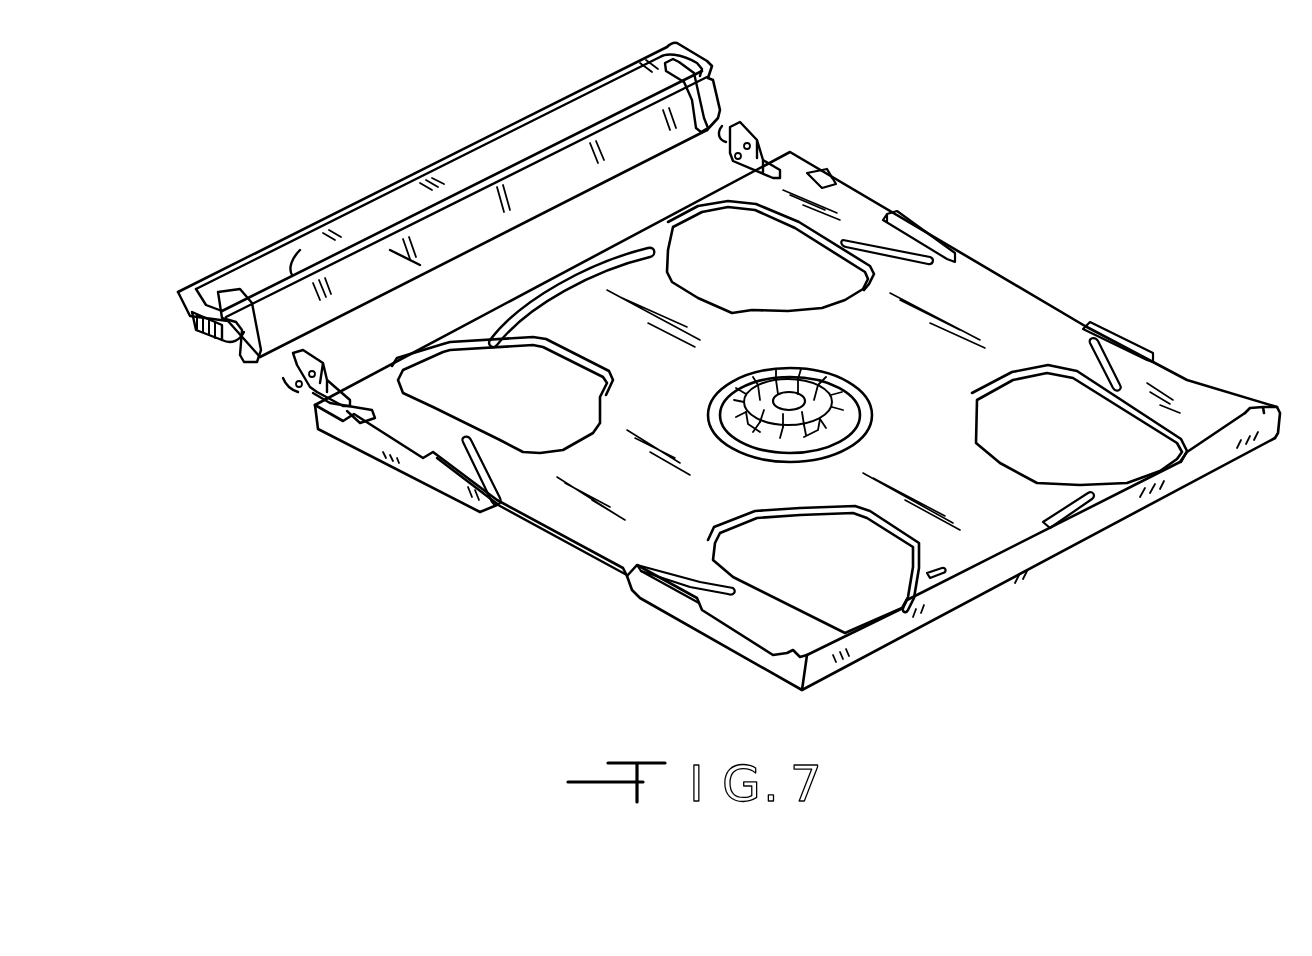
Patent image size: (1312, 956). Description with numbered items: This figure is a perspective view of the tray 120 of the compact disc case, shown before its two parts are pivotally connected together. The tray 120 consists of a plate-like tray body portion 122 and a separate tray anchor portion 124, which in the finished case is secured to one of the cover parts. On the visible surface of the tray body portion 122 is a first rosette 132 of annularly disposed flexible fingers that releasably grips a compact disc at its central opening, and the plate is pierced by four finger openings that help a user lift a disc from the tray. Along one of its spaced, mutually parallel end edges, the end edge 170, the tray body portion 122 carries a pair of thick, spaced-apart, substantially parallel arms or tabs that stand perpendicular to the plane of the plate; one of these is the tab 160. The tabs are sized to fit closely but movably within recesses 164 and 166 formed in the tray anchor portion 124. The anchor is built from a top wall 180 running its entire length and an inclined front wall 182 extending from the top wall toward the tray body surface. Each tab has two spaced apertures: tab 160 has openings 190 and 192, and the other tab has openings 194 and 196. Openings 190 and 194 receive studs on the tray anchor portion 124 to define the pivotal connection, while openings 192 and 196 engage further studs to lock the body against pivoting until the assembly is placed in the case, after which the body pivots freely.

The tray 120 is at (1008, 203).
The tray body portion 122 is at (1002, 332).
The tray anchor portion 124 is at (382, 181).
The first rosette 132 is at (862, 405).
The arm or tab 160 is at (292, 370).
The recess 164 is at (262, 357).
The recess 166 is at (704, 132).
The end edge 170 is at (636, 248).
The top wall 180 is at (290, 247).
The inclined front wall 182 is at (380, 262).
The opening 190 is at (307, 397).
The opening 192 is at (297, 390).
The opening 194 is at (750, 126).
The opening 196 is at (722, 140).